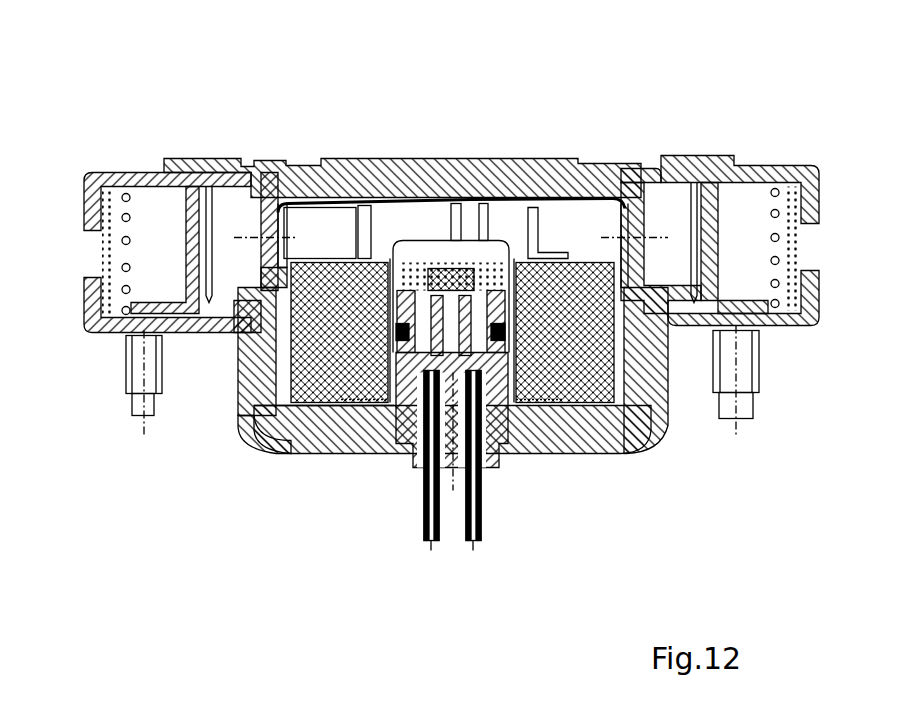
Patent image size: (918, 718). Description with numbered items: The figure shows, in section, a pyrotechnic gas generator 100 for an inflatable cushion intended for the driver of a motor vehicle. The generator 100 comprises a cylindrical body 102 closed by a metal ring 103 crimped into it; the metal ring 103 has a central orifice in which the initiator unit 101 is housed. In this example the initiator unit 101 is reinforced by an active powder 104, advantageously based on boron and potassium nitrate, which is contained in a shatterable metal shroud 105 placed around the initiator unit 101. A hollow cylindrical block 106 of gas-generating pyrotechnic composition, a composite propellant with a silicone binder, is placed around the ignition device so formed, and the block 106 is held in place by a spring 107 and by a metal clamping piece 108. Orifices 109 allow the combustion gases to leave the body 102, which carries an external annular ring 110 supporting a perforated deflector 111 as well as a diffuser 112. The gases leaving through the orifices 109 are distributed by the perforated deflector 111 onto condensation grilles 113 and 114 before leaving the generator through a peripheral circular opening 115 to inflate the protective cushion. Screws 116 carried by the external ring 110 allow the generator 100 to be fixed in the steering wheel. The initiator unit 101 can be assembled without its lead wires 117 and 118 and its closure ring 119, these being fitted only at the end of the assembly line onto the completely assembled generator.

The pyrotechnic gas generator 100 is at (537, 110).
The initiator unit 101 is at (513, 453).
The cylindrical body 102 is at (617, 162).
The metal ring 103 is at (553, 443).
The active powder 104 is at (395, 283).
The shatterable metal shroud 105 is at (582, 445).
The hollow cylindrical block 106 is at (605, 350).
The spring 107 is at (330, 447).
The metal clamping piece 108 is at (372, 205).
The orifices 109 is at (283, 235).
The external annular ring 110 is at (790, 327).
The perforated deflector 111 is at (196, 202).
The diffuser 112 is at (763, 170).
The condensation grille 113 is at (118, 215).
The condensation grille 114 is at (82, 200).
The peripheral circular opening 115 is at (95, 262).
The screws 116 is at (140, 385).
The lead wire 117 is at (422, 528).
The lead wire 118 is at (462, 540).
The closure ring 119 is at (407, 452).